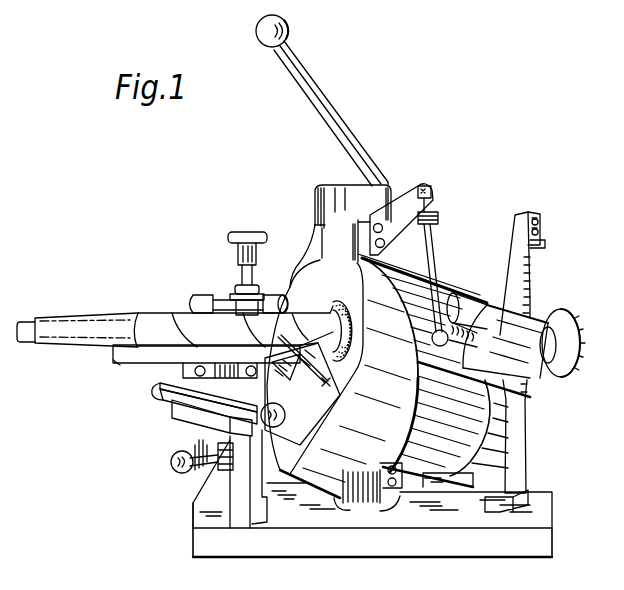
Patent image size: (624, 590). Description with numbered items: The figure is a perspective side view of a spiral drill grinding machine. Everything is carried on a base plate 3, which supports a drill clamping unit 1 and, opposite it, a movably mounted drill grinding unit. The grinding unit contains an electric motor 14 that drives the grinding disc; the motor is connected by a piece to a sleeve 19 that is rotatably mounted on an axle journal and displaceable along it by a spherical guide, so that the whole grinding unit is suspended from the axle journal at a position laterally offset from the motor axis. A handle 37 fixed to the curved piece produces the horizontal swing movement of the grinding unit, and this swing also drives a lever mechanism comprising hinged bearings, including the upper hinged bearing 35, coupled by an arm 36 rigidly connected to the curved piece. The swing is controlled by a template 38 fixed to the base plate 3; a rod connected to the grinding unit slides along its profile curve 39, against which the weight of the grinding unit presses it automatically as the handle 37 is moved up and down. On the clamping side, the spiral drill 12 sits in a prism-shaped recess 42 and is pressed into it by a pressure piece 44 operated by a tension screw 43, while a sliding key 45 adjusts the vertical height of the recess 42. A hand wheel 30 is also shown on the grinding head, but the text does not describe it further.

The drill clamping unit 1 is at (176, 422).
The base plate 3 is at (205, 547).
The drill 12 is at (152, 326).
The electric motor 14 is at (507, 437).
The sleeve 19 is at (503, 300).
The hand wheel 30 is at (560, 353).
The hinged bearing 35 is at (432, 203).
The arm 36 is at (403, 208).
The handle 37 is at (305, 80).
The template 38 is at (519, 235).
The profile curve 39 is at (529, 270).
The prism-shaped recess 42 is at (118, 362).
The tension screw 43 is at (246, 232).
The pressure piece 44 is at (201, 293).
The sliding key 45 is at (220, 402).